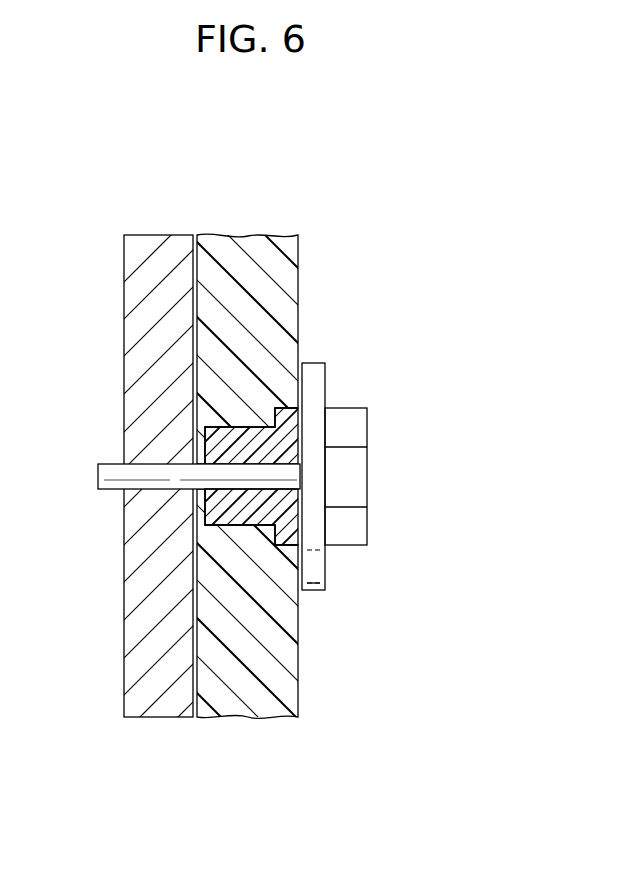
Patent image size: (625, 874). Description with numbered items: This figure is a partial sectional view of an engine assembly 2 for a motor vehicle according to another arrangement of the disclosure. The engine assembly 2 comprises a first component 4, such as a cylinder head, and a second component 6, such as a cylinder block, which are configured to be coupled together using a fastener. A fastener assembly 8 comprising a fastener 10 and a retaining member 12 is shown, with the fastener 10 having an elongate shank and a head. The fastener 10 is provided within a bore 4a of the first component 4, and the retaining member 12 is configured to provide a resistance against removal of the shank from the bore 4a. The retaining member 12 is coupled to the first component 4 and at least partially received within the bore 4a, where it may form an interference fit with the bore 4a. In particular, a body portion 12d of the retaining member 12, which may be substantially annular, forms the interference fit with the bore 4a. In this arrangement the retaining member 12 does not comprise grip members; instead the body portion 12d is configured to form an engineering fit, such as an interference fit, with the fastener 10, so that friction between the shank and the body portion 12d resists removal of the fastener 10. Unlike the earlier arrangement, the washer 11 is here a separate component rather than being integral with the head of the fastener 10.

The engine assembly 2 is at (389, 211).
The first component 4 is at (299, 281).
The bore 4a is at (240, 427).
The second component 6 is at (196, 272).
The fastener assembly 8 is at (389, 376).
The fastener 10 is at (374, 534).
The washer 11 is at (316, 591).
The retaining member 12 is at (192, 511).
The body portion 12d is at (240, 514).